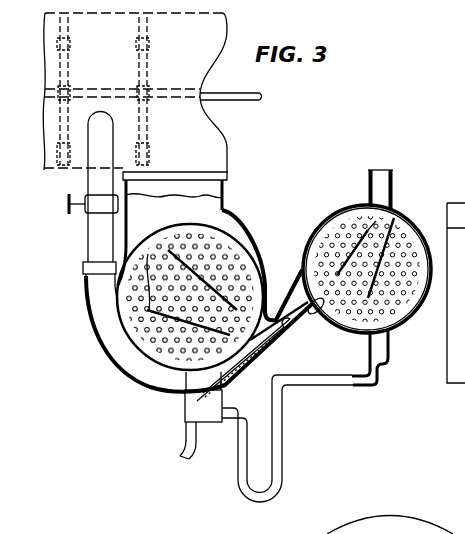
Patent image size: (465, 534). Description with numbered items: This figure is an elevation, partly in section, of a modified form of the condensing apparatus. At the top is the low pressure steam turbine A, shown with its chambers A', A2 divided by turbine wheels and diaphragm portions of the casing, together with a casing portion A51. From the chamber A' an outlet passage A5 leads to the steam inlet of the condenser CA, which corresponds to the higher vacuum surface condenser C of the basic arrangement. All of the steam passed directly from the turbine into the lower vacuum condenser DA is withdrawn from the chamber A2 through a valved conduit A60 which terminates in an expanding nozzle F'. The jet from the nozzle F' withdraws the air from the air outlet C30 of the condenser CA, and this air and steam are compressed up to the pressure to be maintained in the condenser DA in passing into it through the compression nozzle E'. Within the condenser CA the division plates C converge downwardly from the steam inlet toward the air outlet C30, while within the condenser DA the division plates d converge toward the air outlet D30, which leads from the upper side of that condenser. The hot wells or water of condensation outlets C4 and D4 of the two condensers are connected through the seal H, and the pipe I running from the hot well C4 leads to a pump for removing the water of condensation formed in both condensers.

The low pressure steam turbine A is at (135, 96).
The turbine chamber A2 is at (127, 58).
The turbine chamber A' is at (231, 113).
The outlet passage A5 is at (224, 200).
The valved conduit A60 is at (88, 235).
The casing portion A51 is at (332, 532).
The condenser CA is at (250, 252).
The surface condenser C is at (168, 250).
The air outlet C30 is at (264, 320).
The hot well C4 is at (185, 403).
The pipe I is at (188, 453).
The seal H is at (292, 447).
The expanding nozzle F' is at (247, 359).
The lower vacuum condenser DA is at (326, 212).
The compression nozzle E' is at (367, 286).
The division plate d is at (394, 218).
The air outlet D30 is at (378, 200).
The hot well D4 is at (388, 345).